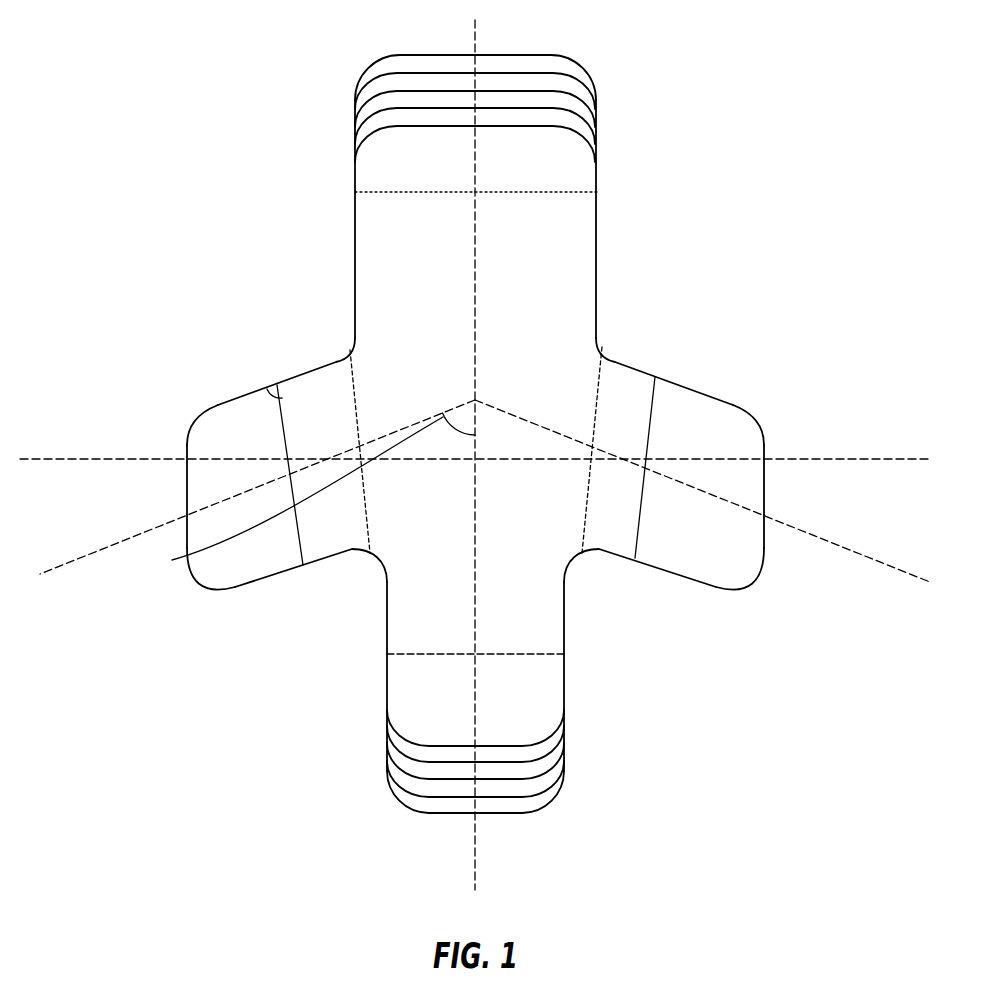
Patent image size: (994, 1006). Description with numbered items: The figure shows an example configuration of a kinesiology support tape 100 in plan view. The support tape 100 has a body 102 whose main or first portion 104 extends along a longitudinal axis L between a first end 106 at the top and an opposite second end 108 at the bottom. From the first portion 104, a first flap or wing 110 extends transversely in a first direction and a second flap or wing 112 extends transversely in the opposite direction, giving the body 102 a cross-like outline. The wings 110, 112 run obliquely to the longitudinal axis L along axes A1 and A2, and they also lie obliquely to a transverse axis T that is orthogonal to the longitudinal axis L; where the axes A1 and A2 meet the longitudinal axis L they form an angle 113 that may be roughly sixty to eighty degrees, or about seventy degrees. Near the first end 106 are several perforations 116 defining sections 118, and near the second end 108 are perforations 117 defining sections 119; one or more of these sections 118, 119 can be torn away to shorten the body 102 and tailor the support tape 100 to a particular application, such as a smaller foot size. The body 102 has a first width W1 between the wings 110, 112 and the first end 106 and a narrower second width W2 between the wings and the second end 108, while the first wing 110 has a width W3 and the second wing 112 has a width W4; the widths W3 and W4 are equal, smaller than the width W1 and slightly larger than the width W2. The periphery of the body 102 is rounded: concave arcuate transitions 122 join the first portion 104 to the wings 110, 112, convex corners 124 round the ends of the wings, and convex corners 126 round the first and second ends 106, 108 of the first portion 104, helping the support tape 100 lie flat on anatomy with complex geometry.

The support tape 100 is at (258, 159).
The body 102 is at (342, 307).
The first portion 104 is at (525, 297).
The first end 106 is at (477, 55).
The second end 108 is at (432, 813).
The first wing 110 is at (197, 481).
The second wing 112 is at (742, 481).
The angle 113 is at (190, 554).
The perforations 116 is at (413, 124).
The perforations 117 is at (417, 760).
The sections 118 is at (390, 106).
The sections 119 is at (427, 747).
The concave arcuate transitions 122 is at (350, 347).
The convex arcuate transitions or corners 124 is at (190, 420).
The convex arcuate transitions or corners 126 is at (372, 76).
The first width W1 is at (388, 198).
The second width W2 is at (503, 655).
The width of first wing W3 is at (265, 390).
The width of second wing W4 is at (640, 525).
The axis of first wing A1 is at (315, 447).
The axis of second wing A2 is at (600, 450).
The longitudinal axis L is at (550, 212).
The transverse axis T is at (767, 458).